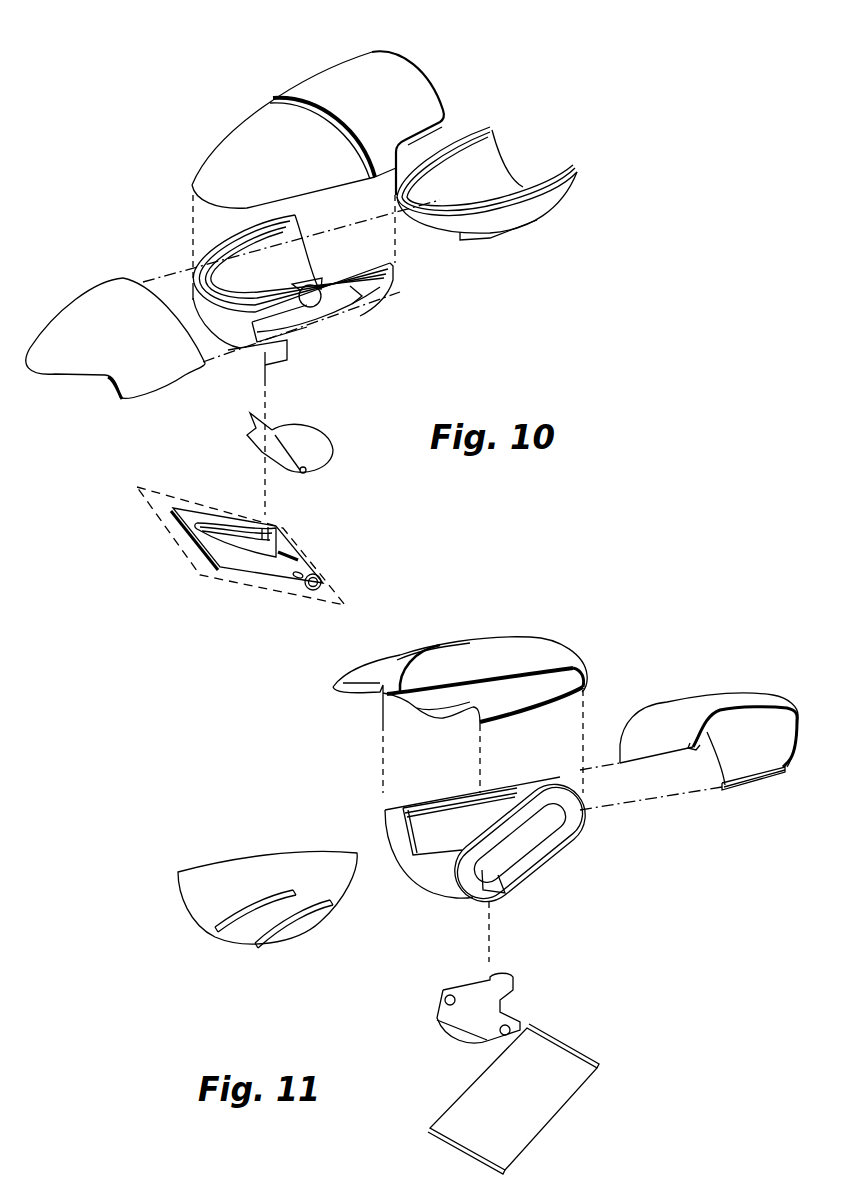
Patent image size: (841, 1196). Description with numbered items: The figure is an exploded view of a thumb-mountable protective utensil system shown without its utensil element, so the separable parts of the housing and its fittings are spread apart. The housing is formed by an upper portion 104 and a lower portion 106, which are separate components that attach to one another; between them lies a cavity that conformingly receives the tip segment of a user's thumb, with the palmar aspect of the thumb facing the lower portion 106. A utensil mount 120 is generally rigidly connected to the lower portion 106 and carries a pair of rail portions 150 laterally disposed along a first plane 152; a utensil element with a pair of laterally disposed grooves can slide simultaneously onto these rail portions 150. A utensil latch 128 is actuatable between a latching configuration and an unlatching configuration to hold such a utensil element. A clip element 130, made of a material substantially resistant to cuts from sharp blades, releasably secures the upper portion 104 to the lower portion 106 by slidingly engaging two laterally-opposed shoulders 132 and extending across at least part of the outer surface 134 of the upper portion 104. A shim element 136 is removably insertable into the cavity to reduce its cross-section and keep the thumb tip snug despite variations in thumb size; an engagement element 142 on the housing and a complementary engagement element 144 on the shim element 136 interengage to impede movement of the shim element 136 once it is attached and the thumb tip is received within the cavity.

In FIG. 10, the upper portion 104 is at (322, 78).
In FIG. 11, the upper portion 104 is at (400, 655).
In FIG. 10, the lower portion 106 is at (383, 288).
In FIG. 11, the lower portion 106 is at (437, 887).
In FIG. 10, the utensil mount 120 is at (197, 543).
In FIG. 11, the utensil mount 120 is at (547, 1062).
In FIG. 10, the utensil latch 128 is at (312, 438).
In FIG. 11, the utensil latch 128 is at (500, 988).
In FIG. 10, the clip element 130 is at (86, 305).
In FIG. 11, the clip element 130 is at (690, 700).
In FIG. 10, the shoulders 132 is at (353, 308).
In FIG. 11, the shoulders 132 is at (436, 812).
In FIG. 10, the outer surface 134 is at (246, 113).
In FIG. 11, the outer surface 134 is at (514, 633).
In FIG. 10, the shim element 136 is at (562, 190).
In FIG. 11, the shim element 136 is at (267, 855).
In FIG. 10, the engagement element 142 is at (314, 290).
In FIG. 10, the engagement element 144 is at (490, 243).
In FIG. 11, the engagement element 144 is at (253, 927).
In FIG. 10, the rail portions 150 is at (218, 506).
In FIG. 11, the rail portions 150 is at (455, 1088).
In FIG. 10, the first plane 152 is at (150, 490).